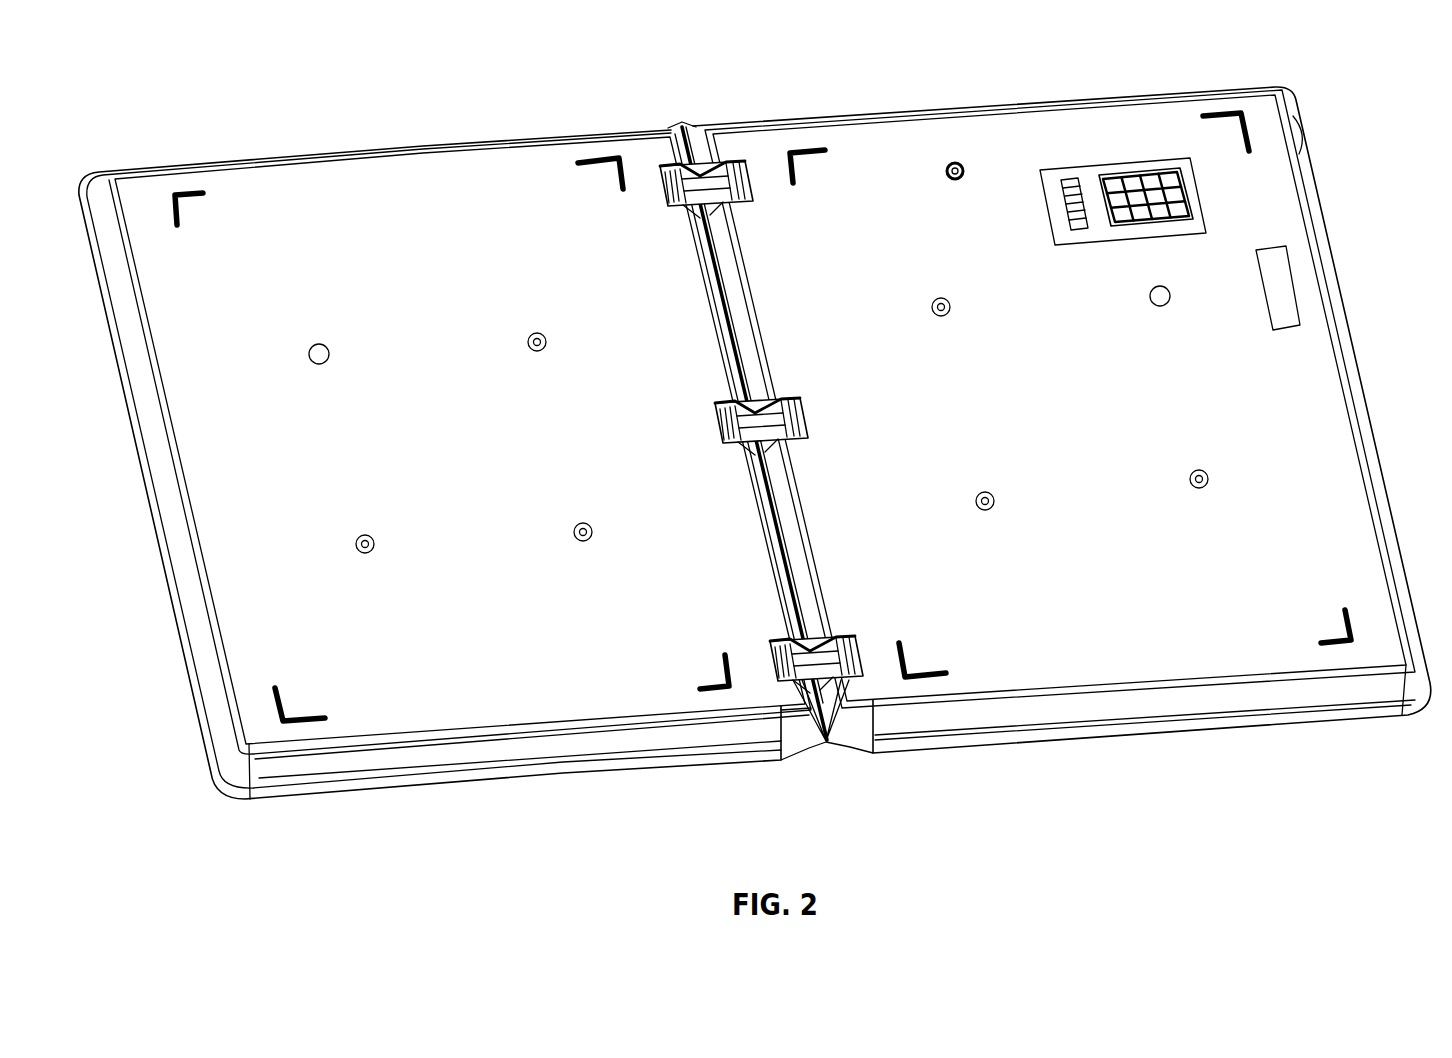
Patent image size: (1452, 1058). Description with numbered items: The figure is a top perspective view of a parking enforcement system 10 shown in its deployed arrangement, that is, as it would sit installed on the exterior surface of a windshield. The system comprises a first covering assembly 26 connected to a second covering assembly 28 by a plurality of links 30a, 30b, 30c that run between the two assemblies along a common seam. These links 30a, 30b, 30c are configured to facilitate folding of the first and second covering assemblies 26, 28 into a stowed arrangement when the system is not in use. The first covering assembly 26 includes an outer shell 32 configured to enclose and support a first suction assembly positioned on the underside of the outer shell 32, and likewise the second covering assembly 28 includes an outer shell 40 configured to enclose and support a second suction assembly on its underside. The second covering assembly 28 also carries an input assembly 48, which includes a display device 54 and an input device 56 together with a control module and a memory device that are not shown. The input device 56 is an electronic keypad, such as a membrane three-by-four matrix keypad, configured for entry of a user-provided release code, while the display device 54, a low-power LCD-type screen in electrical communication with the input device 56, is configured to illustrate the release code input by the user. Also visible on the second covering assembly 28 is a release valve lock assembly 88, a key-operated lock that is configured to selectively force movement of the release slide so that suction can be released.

The foldable device 10 is at (183, 84).
The first covering assembly 26 is at (237, 178).
The second covering assembly 28 is at (842, 143).
The link 30a is at (707, 197).
The link 30b is at (762, 437).
The link 30c is at (818, 643).
The outer shell 32 is at (520, 698).
The outer shell 40 is at (1068, 670).
The input assembly 48 is at (1100, 160).
The display device 54 is at (1065, 175).
The input device 56 is at (1160, 170).
The release valve lock assembly 88 is at (952, 158).